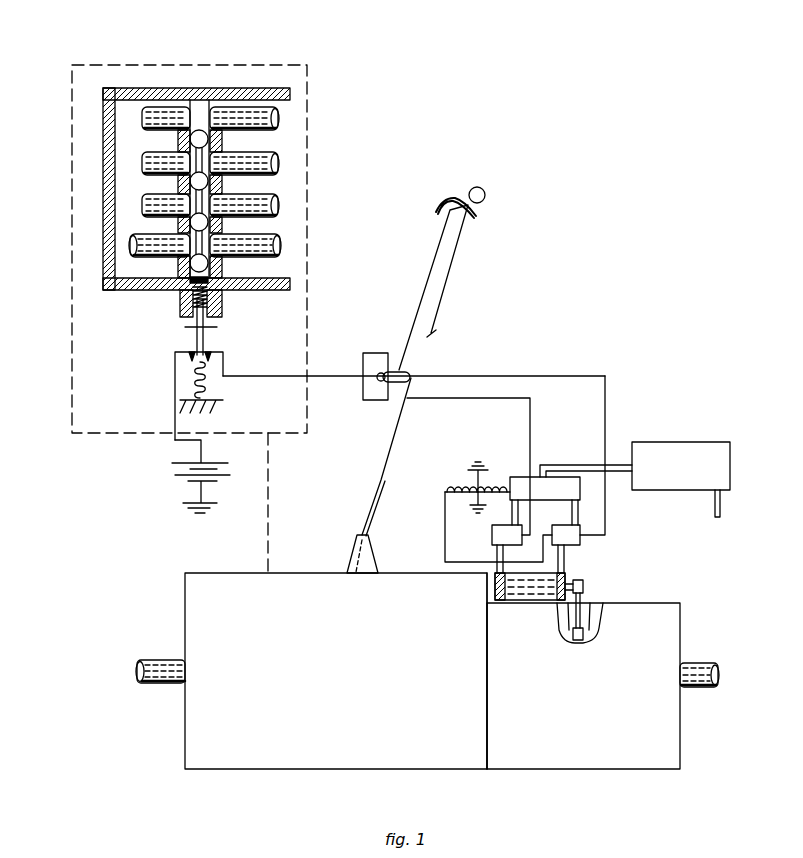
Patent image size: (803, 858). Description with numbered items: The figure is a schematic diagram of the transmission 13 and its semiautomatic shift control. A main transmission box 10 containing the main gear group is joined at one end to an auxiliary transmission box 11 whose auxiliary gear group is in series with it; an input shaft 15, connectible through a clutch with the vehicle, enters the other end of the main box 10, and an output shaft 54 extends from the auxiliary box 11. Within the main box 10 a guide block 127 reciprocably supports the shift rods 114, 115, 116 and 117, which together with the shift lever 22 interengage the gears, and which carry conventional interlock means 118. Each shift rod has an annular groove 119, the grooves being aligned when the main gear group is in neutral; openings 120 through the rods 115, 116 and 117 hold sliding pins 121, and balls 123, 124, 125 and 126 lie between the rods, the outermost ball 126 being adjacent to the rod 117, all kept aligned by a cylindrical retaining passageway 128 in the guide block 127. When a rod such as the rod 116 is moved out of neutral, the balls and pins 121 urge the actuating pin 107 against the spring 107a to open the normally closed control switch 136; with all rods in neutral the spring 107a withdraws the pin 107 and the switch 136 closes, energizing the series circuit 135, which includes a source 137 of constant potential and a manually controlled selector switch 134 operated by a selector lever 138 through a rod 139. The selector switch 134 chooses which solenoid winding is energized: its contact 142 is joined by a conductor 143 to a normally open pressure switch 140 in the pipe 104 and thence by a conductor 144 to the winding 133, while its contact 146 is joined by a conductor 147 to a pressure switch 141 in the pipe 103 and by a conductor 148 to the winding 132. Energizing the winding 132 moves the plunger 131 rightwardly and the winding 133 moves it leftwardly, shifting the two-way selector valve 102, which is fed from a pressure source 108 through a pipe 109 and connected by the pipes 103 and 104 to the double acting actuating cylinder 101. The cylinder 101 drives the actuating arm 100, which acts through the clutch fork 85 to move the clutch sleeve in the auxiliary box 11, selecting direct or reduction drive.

The main transmission box 10 is at (336, 671).
The auxiliary transmission box 11 is at (583, 686).
The transmission 13 is at (182, 752).
The input shaft 15 is at (162, 673).
The shift lever 22 is at (457, 263).
The output shaft 54 is at (695, 668).
The clutch fork 85 is at (585, 592).
The actuating arm 100 is at (552, 598).
The actuating cylinder 101 is at (525, 598).
The selector valve 102 is at (538, 477).
The pipe 103 is at (497, 558).
The pipe 104 is at (565, 558).
The actuating pin 107 is at (212, 327).
The spring 107a is at (190, 306).
The pressure source 108 is at (697, 442).
The pipe 109 is at (616, 463).
The shift rod 114 is at (278, 120).
The shift rod 115 is at (278, 163).
The shift rod 116 is at (280, 206).
The shift rod 117 is at (280, 253).
The interlock means 118 is at (200, 86).
The annular groove 119 is at (194, 112).
The opening 120 is at (190, 202).
The pin 121 is at (216, 204).
The ball 123 is at (190, 139).
The ball 124 is at (190, 181).
The ball 125 is at (190, 223).
The ball 126 is at (192, 262).
The guide block 127 is at (201, 108).
The retaining passageway 128 is at (220, 148).
The plunger 131 is at (447, 491).
The solenoid winding 132 is at (498, 487).
The solenoid winding 133 is at (455, 487).
The selector switch 134 is at (392, 352).
The series circuit 135 is at (172, 438).
The control switch 136 is at (196, 367).
The source of constant potential 137 is at (185, 483).
The selector lever 138 is at (448, 200).
The rod 139 is at (437, 253).
The pressure switch 140 is at (580, 540).
The pressure switch 141 is at (495, 542).
The contact 142 is at (413, 367).
The conductor 143 is at (572, 375).
The conductor 144 is at (445, 532).
The contact 146 is at (397, 401).
The conductor 147 is at (533, 412).
The conductor 148 is at (508, 514).